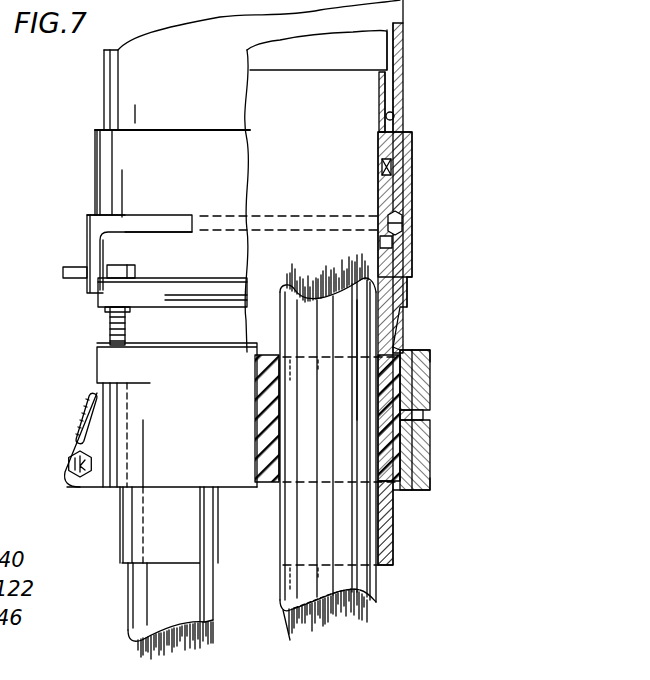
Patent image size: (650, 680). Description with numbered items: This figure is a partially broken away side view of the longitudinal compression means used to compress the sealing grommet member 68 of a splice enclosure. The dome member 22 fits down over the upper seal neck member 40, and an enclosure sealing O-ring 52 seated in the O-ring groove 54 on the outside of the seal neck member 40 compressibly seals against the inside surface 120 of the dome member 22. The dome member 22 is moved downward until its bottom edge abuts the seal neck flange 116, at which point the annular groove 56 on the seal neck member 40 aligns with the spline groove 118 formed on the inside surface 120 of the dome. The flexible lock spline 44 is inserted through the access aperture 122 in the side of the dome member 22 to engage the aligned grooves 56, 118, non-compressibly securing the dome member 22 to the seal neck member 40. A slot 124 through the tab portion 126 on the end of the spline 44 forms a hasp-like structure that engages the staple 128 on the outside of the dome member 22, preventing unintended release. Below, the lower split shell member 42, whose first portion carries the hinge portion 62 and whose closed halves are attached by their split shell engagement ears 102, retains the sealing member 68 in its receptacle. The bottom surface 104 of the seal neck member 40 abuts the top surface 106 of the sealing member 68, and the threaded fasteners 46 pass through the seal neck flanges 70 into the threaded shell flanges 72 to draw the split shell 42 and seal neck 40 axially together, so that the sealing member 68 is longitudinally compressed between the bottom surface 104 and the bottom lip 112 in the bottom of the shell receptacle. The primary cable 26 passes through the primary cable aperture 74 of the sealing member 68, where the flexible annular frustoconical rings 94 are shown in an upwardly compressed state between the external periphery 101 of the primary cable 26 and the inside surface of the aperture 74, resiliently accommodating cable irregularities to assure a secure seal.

The dome member 22 is at (403, 76).
The inside surface 120 is at (394, 117).
The O-ring groove 54 is at (382, 171).
The enclosure sealing O-ring 52 is at (412, 172).
The lock spline 44 is at (146, 216).
The annular groove 56 is at (381, 241).
The spline groove 118 is at (404, 232).
The seal neck flange 116 is at (408, 290).
The upper seal neck member 40 is at (401, 327).
The bottom surface 104 is at (430, 356).
The sealing grommet member 68 is at (430, 388).
The lower split shell member 42 is at (434, 447).
The hinge portion 62 is at (431, 480).
The bottom lip 112 is at (394, 492).
The primary cable 26 is at (384, 590).
The top surface 106 is at (378, 334).
The primary cable aperture 74 is at (311, 429).
The flexible annular frustoconical rings 94 is at (258, 456).
The external periphery 101 is at (283, 611).
The split shell engagement ears 102 is at (72, 444).
The seal neck flanges 70 is at (106, 288).
The threaded fasteners 46 is at (110, 333).
The shell flanges 72 is at (100, 356).
The tab portion 126 is at (86, 215).
The slot 124 is at (85, 231).
The staple 128 is at (68, 268).
The access aperture 122 is at (160, 219).